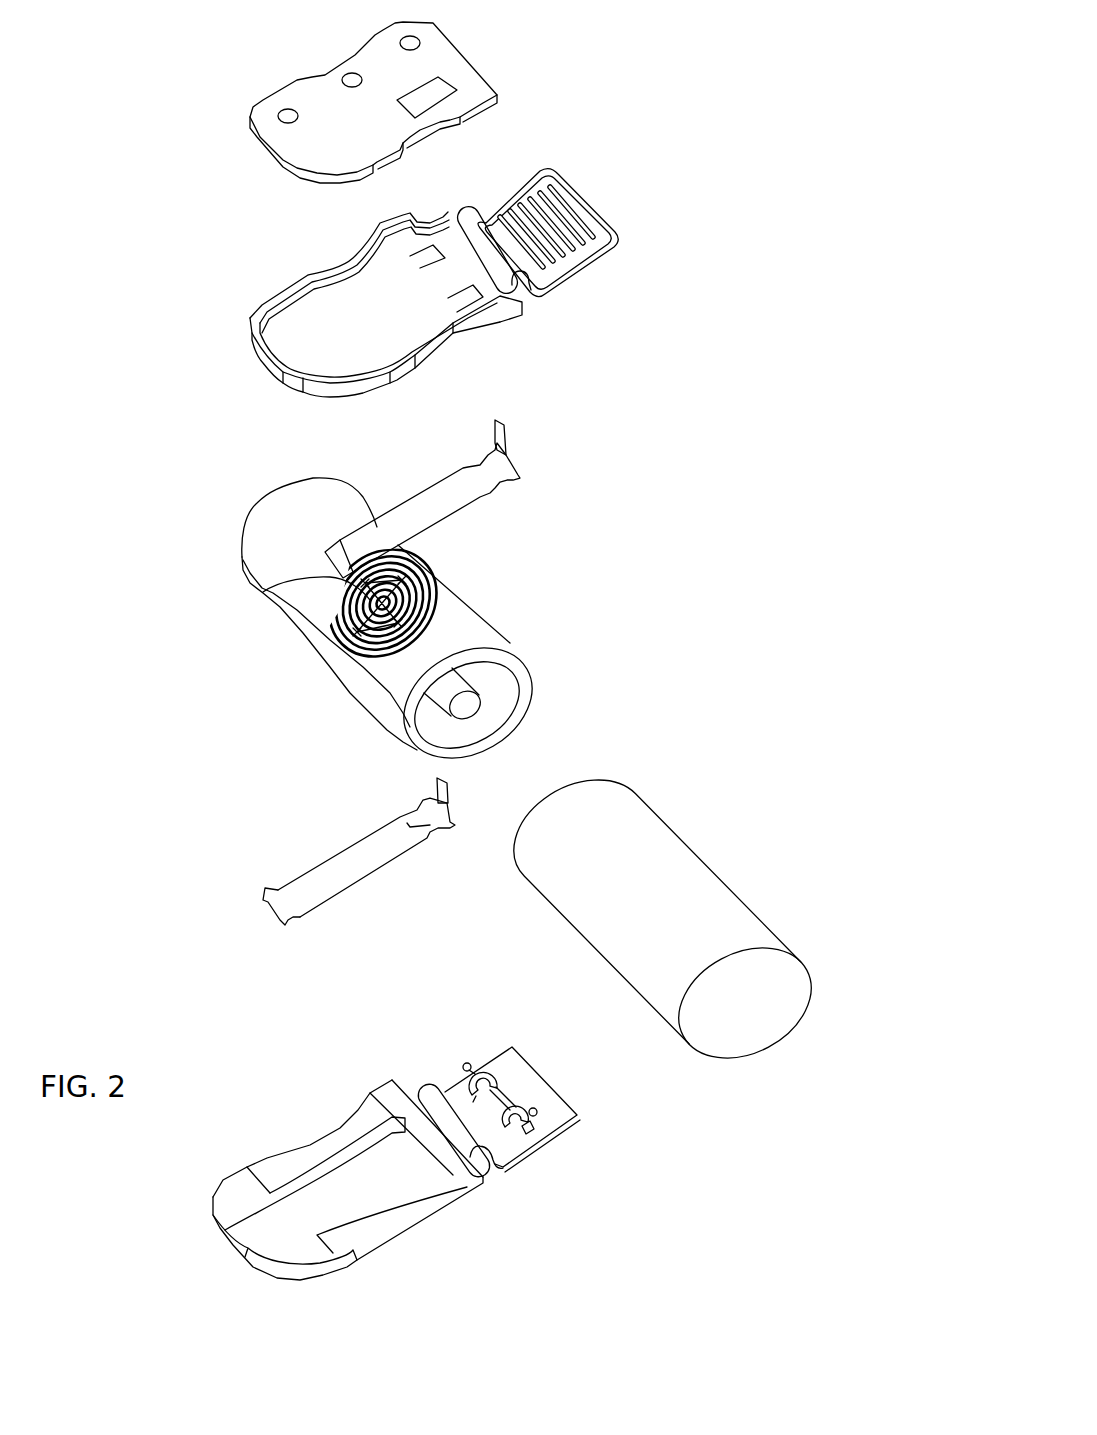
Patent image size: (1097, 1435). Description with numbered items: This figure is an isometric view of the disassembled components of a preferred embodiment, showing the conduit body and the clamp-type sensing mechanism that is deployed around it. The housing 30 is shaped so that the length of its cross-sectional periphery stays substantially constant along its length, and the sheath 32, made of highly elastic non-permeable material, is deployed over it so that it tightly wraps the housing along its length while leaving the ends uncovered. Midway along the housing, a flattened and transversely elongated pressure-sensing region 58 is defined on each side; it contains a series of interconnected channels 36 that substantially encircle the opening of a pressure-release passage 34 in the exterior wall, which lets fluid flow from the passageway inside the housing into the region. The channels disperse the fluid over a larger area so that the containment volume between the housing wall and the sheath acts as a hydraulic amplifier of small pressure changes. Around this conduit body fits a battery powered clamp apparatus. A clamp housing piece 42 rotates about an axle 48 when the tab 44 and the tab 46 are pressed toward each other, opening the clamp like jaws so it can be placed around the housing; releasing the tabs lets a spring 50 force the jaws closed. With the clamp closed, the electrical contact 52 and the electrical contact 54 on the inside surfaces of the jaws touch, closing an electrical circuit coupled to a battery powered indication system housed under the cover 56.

The housing 30 is at (482, 629).
The sheath 32 is at (573, 840).
The pressure-release passage 34 is at (305, 572).
The interconnected channels 36 is at (415, 576).
The clamp housing piece 42 is at (463, 1132).
The tab 44 is at (568, 232).
The tab 46 is at (507, 1143).
The axle 48 is at (586, 1122).
The spring 50 is at (538, 1080).
The electrical contact 52 is at (430, 833).
The electrical contact 54 is at (435, 507).
The cover 56 is at (452, 58).
The pressure-sensing region 58 is at (358, 632).